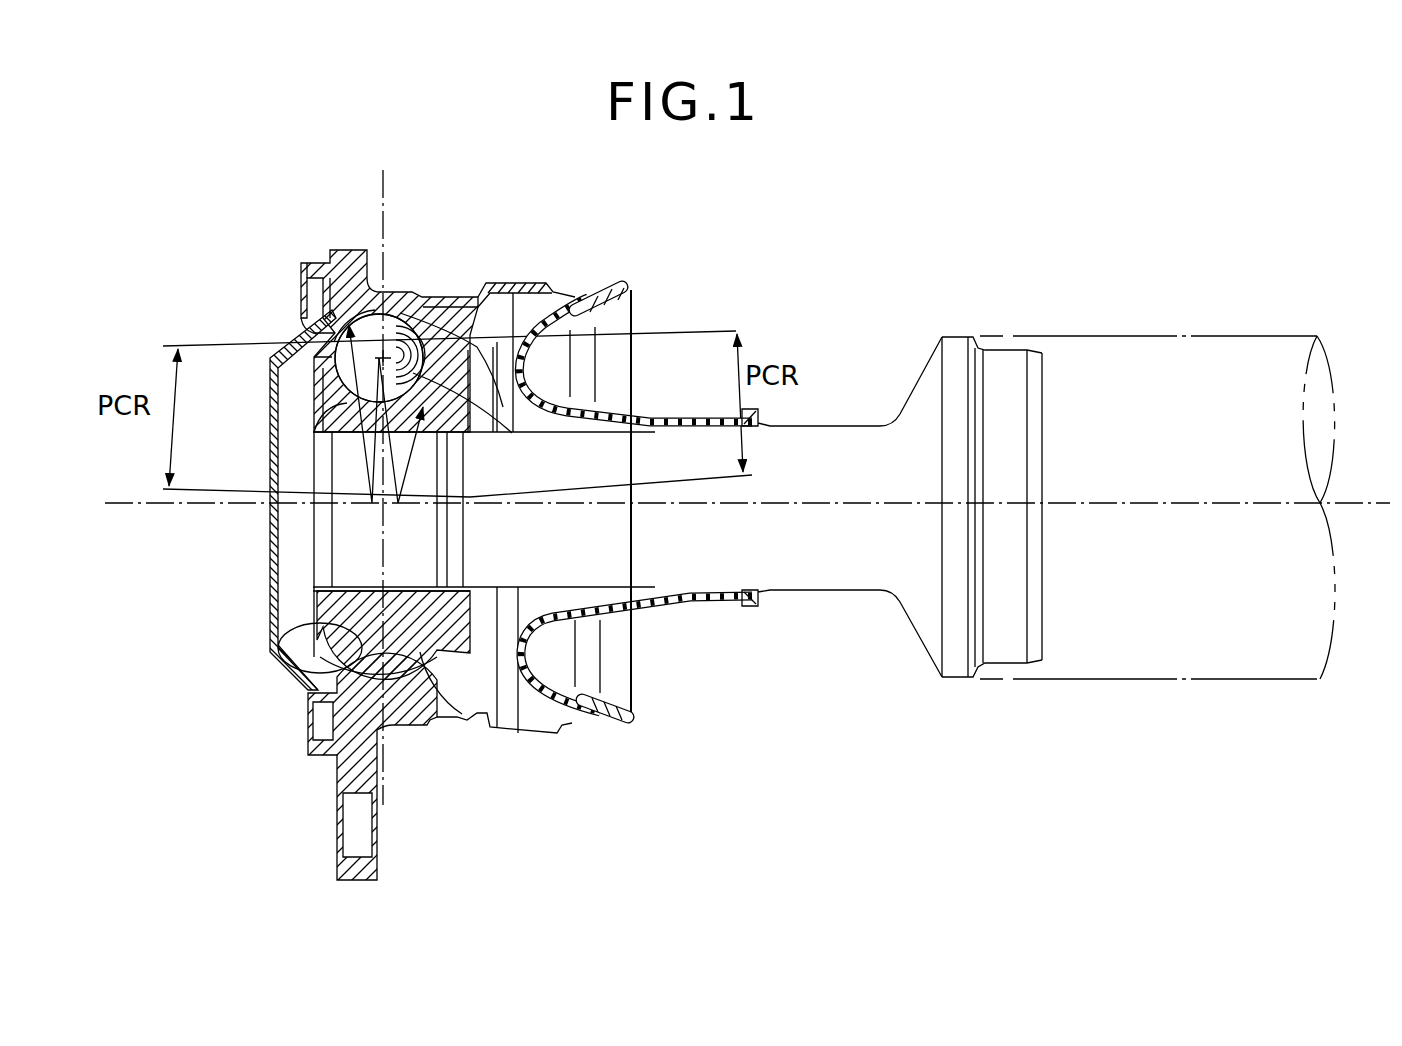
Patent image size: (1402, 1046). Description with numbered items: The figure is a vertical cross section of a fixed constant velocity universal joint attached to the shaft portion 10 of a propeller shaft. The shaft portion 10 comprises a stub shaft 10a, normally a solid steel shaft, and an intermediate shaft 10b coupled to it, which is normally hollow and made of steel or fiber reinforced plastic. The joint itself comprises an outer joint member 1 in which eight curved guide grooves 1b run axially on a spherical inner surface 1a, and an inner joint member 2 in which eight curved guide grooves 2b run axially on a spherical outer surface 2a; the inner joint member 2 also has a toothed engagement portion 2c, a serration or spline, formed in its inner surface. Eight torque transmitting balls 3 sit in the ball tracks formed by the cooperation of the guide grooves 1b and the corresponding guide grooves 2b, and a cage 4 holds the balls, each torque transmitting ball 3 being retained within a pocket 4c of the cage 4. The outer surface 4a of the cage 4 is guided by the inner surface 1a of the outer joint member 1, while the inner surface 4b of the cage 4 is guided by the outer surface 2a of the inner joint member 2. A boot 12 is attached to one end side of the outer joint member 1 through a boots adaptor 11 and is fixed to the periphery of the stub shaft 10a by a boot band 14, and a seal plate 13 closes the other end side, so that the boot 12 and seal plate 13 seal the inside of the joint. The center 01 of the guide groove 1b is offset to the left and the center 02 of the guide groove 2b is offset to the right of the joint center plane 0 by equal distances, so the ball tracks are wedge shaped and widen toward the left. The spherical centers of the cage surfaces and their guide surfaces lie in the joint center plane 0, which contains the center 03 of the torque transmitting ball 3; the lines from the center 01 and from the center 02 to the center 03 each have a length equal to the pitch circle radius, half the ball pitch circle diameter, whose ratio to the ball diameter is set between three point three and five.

The joint center plane 0 is at (747, 487).
The outer joint member 1 is at (325, 260).
The spherical inner surface 1a is at (430, 723).
The curved guide groove 1b is at (322, 330).
The inner joint member 2 is at (318, 387).
The spherical outer surface 2a is at (455, 720).
The curved guide groove 2b is at (312, 402).
The engagement portion 2c is at (355, 580).
The torque transmitting ball 3 is at (368, 312).
The cage 4 is at (443, 343).
The outer surface of the cage 4a is at (318, 708).
The inner surface of the cage 4b is at (290, 630).
The pocket 4c is at (500, 425).
The center of the guide groove of the outer joint member 01 is at (370, 506).
The center of the guide groove of the inner joint member 02 is at (400, 508).
The center of the torque transmitting ball 03 is at (388, 335).
The shaft portion 10 is at (1232, 330).
The stub shaft 10a is at (865, 447).
The intermediate shaft 10b is at (1108, 332).
The boots adaptor 11 is at (555, 728).
The boot 12 is at (648, 603).
The seal plate 13 is at (268, 595).
The boot band 14 is at (722, 607).